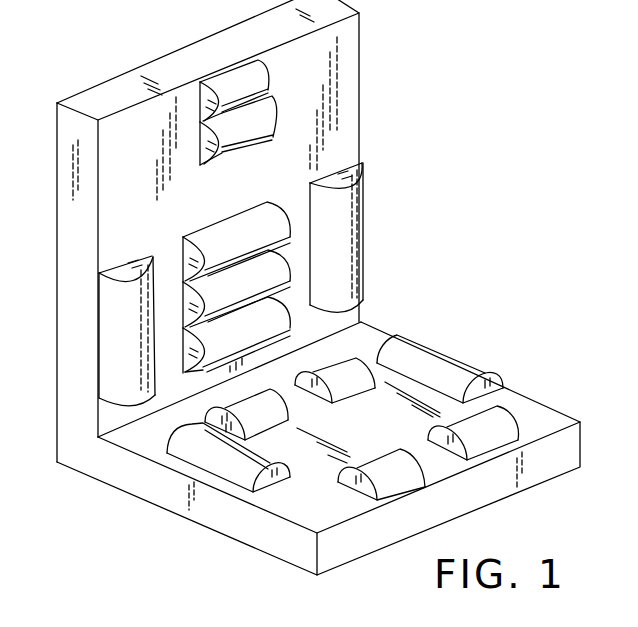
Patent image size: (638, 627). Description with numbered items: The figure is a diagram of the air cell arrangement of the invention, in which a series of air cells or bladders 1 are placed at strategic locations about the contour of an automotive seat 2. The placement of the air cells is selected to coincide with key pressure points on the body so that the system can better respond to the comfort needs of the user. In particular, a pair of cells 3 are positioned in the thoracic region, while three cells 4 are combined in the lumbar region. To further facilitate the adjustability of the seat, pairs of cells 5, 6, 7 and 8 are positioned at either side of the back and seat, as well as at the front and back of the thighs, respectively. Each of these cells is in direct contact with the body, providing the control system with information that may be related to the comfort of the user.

The air cells 1 is at (412, 180).
The automotive seat 2 is at (215, 513).
The pair of cells 3 is at (258, 125).
The three cells 4 is at (179, 308).
The pair of cells 5 is at (117, 324).
The pair of cells 6 is at (167, 466).
The pair of cells 7 is at (270, 415).
The pair of cells 8 is at (473, 428).